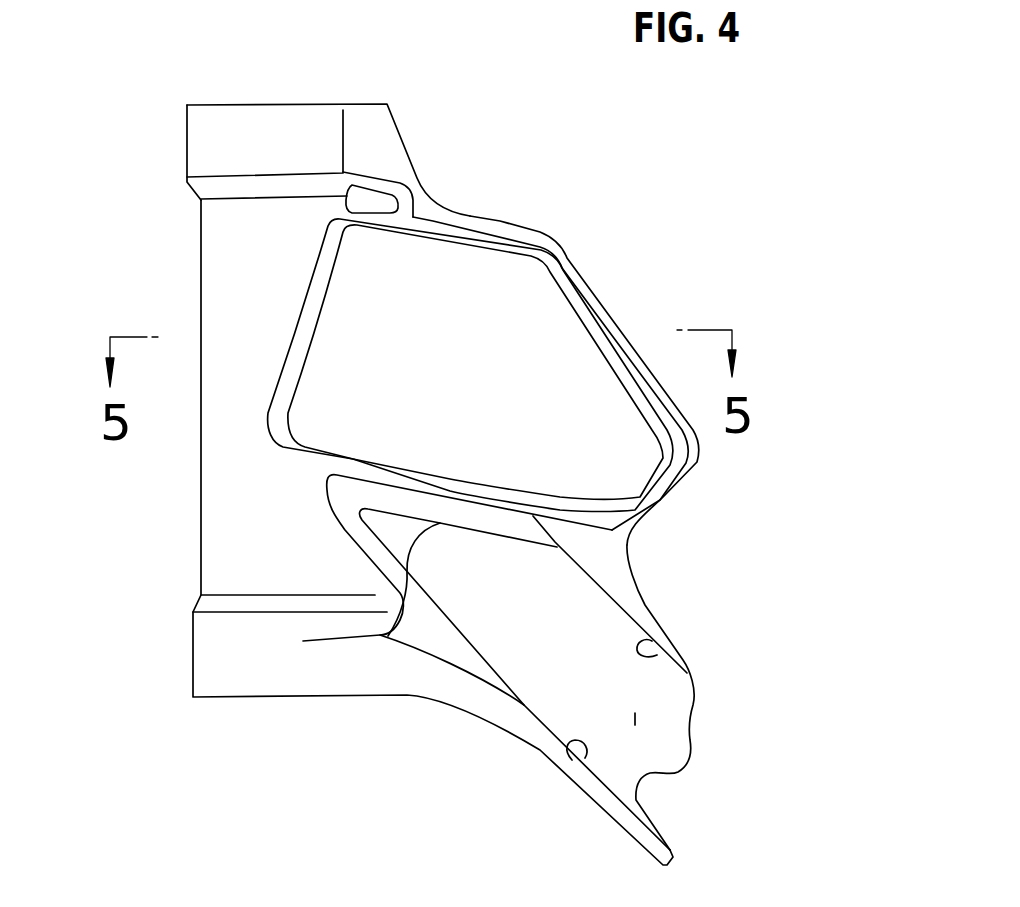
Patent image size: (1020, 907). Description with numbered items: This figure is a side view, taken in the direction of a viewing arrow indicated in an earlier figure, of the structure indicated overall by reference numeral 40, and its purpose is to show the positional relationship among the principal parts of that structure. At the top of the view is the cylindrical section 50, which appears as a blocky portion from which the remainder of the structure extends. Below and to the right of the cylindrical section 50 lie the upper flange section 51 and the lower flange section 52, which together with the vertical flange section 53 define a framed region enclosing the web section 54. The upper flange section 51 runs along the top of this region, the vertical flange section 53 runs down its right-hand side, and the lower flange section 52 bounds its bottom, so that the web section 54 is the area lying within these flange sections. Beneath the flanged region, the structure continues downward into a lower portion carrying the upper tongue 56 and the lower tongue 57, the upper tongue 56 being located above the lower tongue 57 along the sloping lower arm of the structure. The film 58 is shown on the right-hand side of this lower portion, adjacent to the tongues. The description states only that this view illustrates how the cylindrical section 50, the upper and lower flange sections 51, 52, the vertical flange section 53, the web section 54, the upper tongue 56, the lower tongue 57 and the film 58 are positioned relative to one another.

The bracket assembly 40 is at (158, 214).
The cylindrical section 50 is at (258, 103).
The upper flange section 51 is at (502, 220).
The lower flange section 52 is at (497, 487).
The vertical flange section 53 is at (617, 333).
The web section 54 is at (463, 360).
The upper tongue 56 is at (650, 652).
The lower tongue 57 is at (567, 767).
The film 58 is at (636, 718).